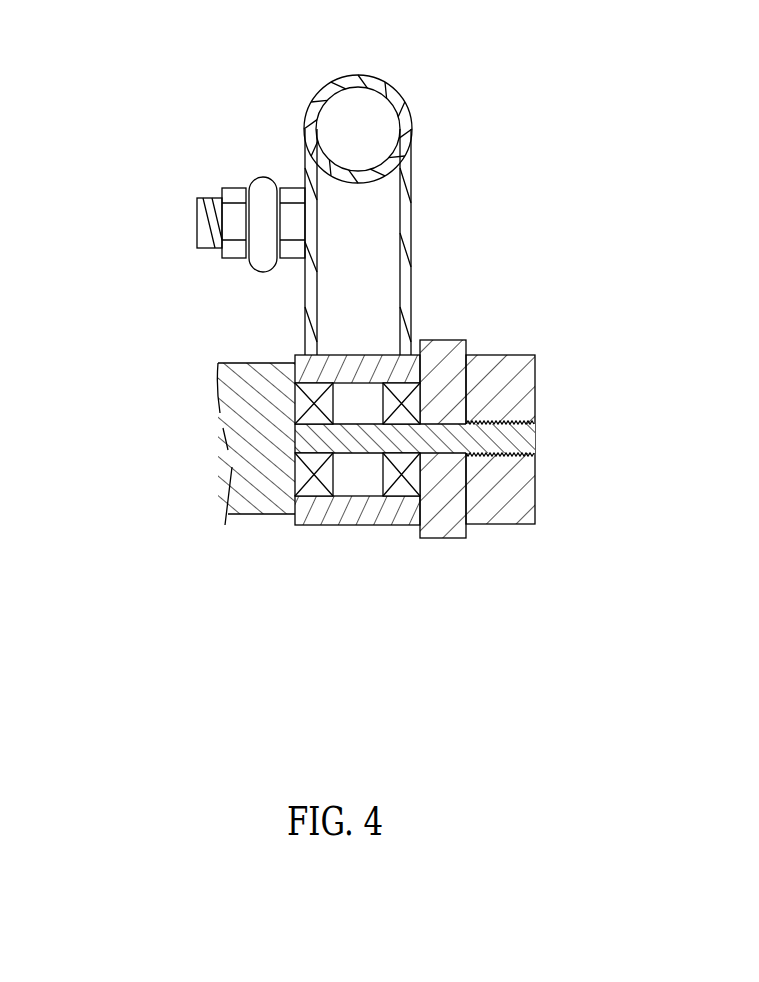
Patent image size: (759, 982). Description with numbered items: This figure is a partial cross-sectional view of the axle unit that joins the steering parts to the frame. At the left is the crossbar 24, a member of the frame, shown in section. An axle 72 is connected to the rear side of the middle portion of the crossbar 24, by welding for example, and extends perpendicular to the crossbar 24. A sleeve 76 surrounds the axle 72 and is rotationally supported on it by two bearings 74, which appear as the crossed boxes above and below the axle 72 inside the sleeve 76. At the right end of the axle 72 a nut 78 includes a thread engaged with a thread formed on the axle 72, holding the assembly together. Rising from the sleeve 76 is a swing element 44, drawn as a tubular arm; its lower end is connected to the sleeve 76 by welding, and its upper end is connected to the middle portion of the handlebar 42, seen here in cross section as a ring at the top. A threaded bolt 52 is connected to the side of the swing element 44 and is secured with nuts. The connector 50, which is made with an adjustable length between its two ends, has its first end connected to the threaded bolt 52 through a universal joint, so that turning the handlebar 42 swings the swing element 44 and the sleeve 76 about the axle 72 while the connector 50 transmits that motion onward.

The crossbar 24 is at (260, 375).
The handlebar 42 is at (402, 125).
The swing element 44 is at (308, 168).
The connector 50 is at (263, 182).
The threaded bolt 52 is at (200, 208).
The axle 72 is at (352, 437).
The bearings 74 is at (412, 407).
The sleeve 76 is at (350, 365).
The nut 78 is at (527, 495).